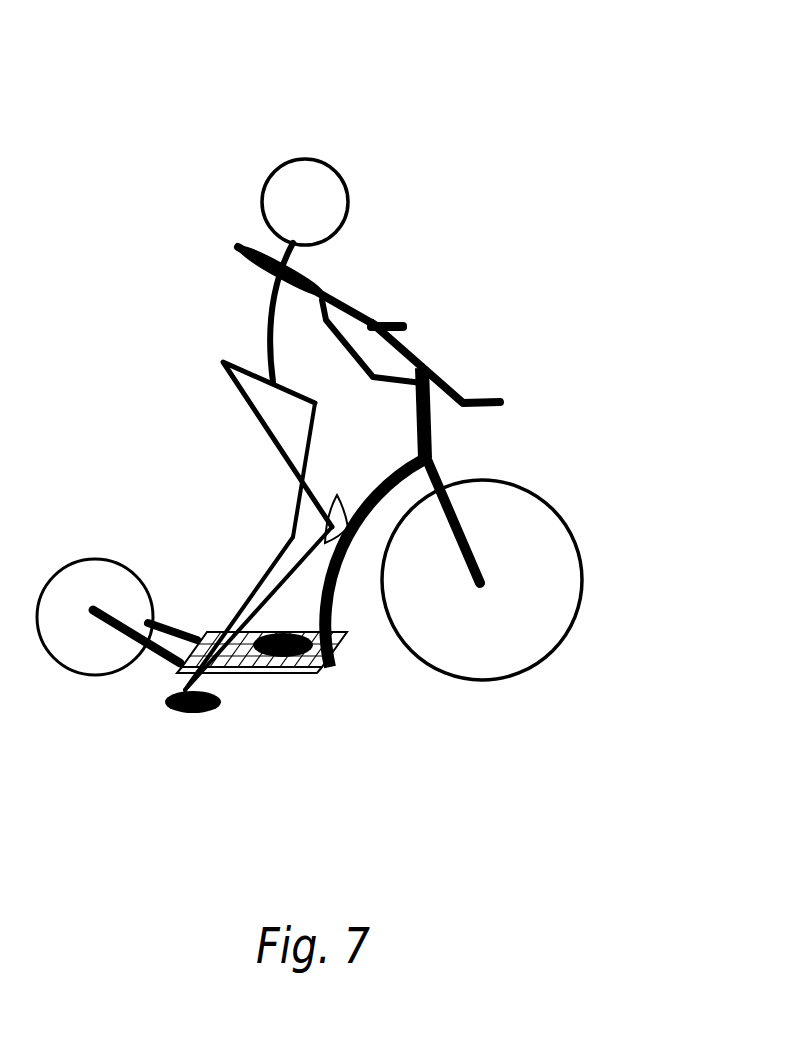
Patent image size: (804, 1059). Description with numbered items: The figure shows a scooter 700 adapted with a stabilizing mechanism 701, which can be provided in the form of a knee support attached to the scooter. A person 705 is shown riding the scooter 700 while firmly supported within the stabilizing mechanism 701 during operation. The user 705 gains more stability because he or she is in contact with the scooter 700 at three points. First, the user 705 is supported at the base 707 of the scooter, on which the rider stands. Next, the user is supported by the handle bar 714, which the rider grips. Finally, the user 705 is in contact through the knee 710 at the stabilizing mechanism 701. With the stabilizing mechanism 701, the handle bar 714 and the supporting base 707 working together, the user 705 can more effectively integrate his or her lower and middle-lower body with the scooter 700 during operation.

The scooter 700 is at (550, 388).
The stabilizing mechanism 701 is at (333, 532).
The person 705 is at (273, 145).
The base 707 is at (286, 682).
The knee 710 is at (310, 522).
The handle bar 714 is at (395, 320).